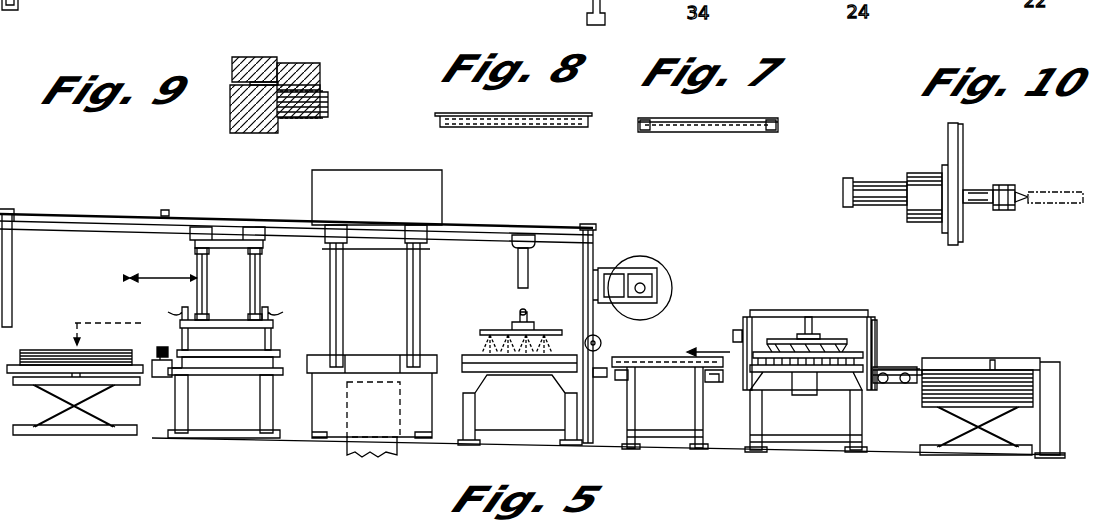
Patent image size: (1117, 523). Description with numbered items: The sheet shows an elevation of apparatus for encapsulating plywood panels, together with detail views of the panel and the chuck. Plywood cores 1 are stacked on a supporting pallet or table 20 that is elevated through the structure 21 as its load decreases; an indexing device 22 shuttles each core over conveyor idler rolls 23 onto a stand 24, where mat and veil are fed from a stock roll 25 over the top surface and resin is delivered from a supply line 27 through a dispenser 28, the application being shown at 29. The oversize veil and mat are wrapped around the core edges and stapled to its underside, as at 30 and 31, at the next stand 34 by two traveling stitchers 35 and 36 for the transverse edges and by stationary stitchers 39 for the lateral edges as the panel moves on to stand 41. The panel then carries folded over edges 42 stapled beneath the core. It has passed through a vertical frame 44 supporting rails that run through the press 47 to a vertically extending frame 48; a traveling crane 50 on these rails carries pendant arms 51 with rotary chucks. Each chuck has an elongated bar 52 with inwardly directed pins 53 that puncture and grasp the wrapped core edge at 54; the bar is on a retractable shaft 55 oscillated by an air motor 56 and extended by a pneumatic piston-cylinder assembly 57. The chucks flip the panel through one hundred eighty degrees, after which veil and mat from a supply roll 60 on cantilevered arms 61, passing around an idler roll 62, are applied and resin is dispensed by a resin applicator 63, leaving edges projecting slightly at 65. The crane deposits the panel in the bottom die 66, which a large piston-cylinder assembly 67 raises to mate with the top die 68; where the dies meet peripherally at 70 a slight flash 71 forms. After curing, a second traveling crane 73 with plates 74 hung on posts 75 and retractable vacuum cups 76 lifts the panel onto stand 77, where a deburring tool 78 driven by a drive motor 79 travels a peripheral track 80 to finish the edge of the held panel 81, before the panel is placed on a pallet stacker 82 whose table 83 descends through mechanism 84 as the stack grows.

In FIG. 9, the plywood core 1 is at (333, 98).
In FIG. 8, the plywood core 1 is at (522, 117).
In FIG. 7, the plywood core 1 is at (720, 128).
In FIG. 5, the plywood core 1 is at (908, 367).
In FIG. 5, the supporting pallet or table 20 is at (1023, 407).
In FIG. 5, the elevating structure 21 is at (978, 448).
In FIG. 5, the indexing device 22 is at (1013, 356).
In FIG. 5, the conveyor idler rolls 23 is at (903, 387).
In FIG. 5, the stand 24 is at (843, 392).
In FIG. 5, the stock roll 25 is at (843, 317).
In FIG. 5, the resin supply line 27 is at (802, 318).
In FIG. 5, the dispenser 28 is at (767, 334).
In FIG. 5, the resin application point 29 is at (853, 340).
In FIG. 7, the staple 30 is at (643, 131).
In FIG. 7, the staple 31 is at (767, 133).
In FIG. 5, the stand 34 is at (697, 409).
In FIG. 5, the traveling stitcher 35 is at (623, 383).
In FIG. 5, the traveling stitcher 36 is at (713, 383).
In FIG. 5, the stationary stitchers 39 is at (602, 363).
In FIG. 5, the stand 41 is at (565, 403).
In FIG. 7, the folded over edges of veil and mat 42 is at (778, 126).
In FIG. 5, the vertical frame 44 is at (595, 247).
In FIG. 5, the press 47 is at (356, 168).
In FIG. 5, the vertically extending frame 48 is at (12, 270).
In FIG. 5, the traveling crane or carriage 50 is at (522, 235).
In FIG. 10, the pendant interconnected arms 51 is at (965, 130).
In FIG. 5, the pendant interconnected arms 51 is at (517, 261).
In FIG. 10, the elongated bar 52 is at (1008, 185).
In FIG. 10, the pins 53 is at (1027, 190).
In FIG. 10, the grasped panel edge 54 is at (1072, 210).
In FIG. 10, the retractable shaft 55 is at (963, 207).
In FIG. 10, the air motor 56 is at (927, 222).
In FIG. 10, the pneumatic piston-cylinder assembly 57 is at (882, 182).
In FIG. 5, the supply roll 60 is at (652, 258).
In FIG. 5, the cantilevered arms 61 is at (658, 286).
In FIG. 5, the idler roll 62 is at (586, 337).
In FIG. 5, the resin applicator 63 is at (495, 327).
In FIG. 8, the projecting edges 65 is at (592, 115).
In FIG. 9, the bottom die 66 is at (243, 122).
In FIG. 5, the bottom die 66 is at (372, 352).
In FIG. 5, the piston-cylinder assembly 67 is at (397, 453).
In FIG. 9, the top die 68 is at (310, 63).
In FIG. 9, the die meeting periphery 70 is at (280, 63).
In FIG. 9, the flash 71 is at (253, 89).
In FIG. 5, the traveling crane 73 is at (214, 240).
In FIG. 5, the plates 74 is at (227, 320).
In FIG. 5, the posts 75 is at (262, 272).
In FIG. 5, the retractable vacuum cups 76 is at (273, 347).
In FIG. 5, the stand 77 is at (270, 402).
In FIG. 5, the deburring tool 78 is at (160, 327).
In FIG. 5, the drive motor 79 is at (168, 378).
In FIG. 5, the track 80 is at (220, 376).
In FIG. 5, the panel 81 is at (220, 349).
In FIG. 5, the pallet stacker 82 is at (13, 352).
In FIG. 5, the table 83 is at (123, 390).
In FIG. 5, the descending mechanism 84 is at (90, 420).